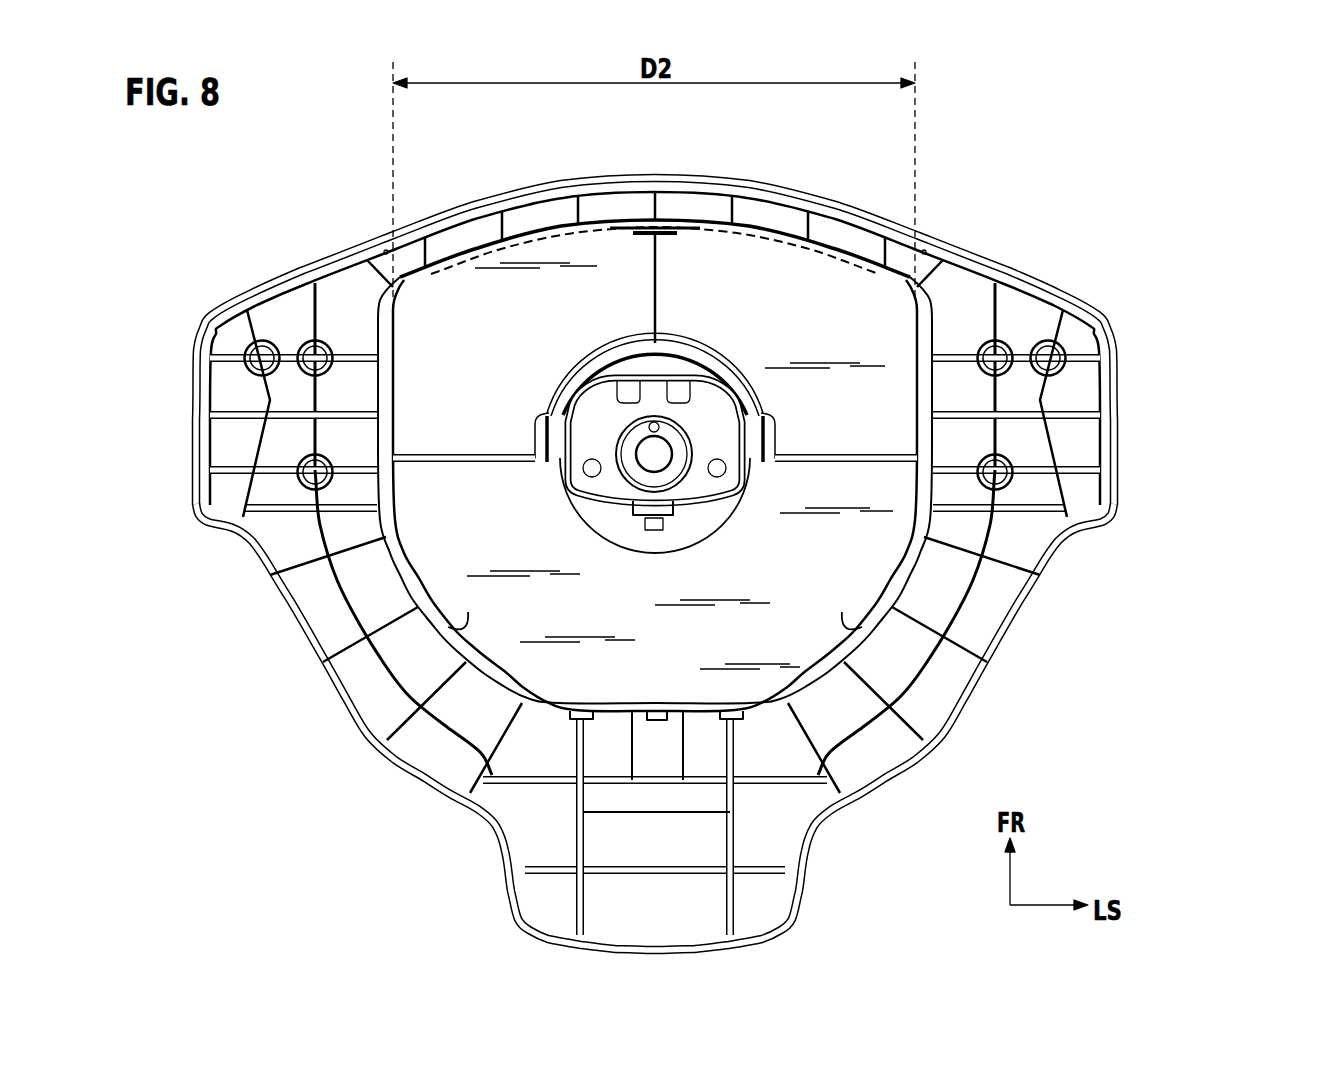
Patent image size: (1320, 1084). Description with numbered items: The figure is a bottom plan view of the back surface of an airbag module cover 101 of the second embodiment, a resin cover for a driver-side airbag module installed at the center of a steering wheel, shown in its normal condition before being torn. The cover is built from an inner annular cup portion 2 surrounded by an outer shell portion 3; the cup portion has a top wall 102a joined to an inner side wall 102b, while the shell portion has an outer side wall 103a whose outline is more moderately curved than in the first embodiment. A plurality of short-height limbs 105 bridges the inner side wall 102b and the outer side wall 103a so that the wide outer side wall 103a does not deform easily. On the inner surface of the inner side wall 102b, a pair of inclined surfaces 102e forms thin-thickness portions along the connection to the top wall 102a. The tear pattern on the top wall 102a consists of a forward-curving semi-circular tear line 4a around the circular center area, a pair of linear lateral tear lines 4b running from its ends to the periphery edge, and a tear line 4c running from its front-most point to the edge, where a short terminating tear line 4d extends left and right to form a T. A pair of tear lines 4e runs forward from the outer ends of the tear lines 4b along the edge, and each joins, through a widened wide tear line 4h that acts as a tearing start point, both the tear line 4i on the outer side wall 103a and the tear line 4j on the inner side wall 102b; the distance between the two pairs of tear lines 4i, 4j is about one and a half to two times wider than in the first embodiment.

The airbag module cover 101 is at (750, 564).
The outer shell portion 3 is at (1062, 576).
The inner annular cup portion 2 is at (920, 589).
The outer side wall 103a is at (832, 208).
The limb 105 is at (716, 212).
The inner side wall 102b is at (757, 226).
The inclined surface 102e is at (477, 250).
The top wall 102a is at (862, 547).
The semi-circular tear line 4a is at (568, 374).
The tear line 4b is at (481, 464).
The tear line 4c is at (657, 318).
The short tear line 4d is at (643, 238).
The tear line 4e is at (395, 397).
The wide tear line 4h is at (395, 312).
The tear line 4i is at (400, 287).
The tear line 4j is at (386, 250).